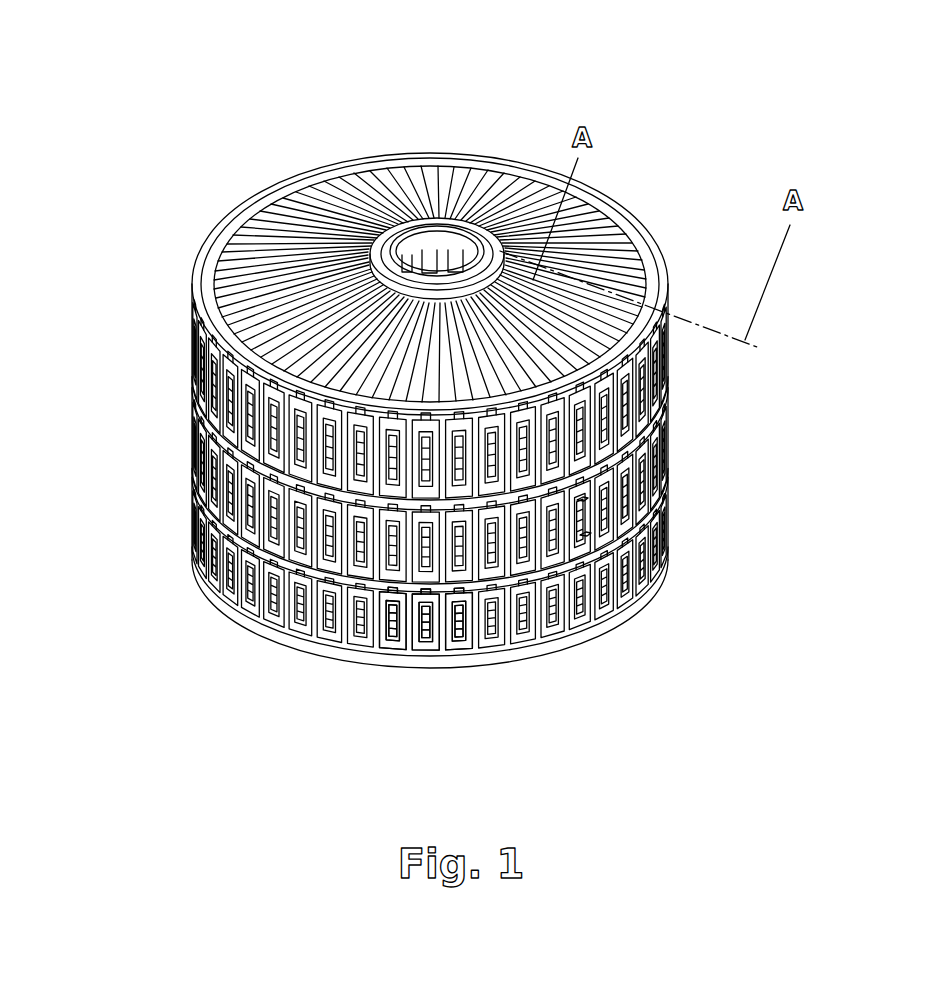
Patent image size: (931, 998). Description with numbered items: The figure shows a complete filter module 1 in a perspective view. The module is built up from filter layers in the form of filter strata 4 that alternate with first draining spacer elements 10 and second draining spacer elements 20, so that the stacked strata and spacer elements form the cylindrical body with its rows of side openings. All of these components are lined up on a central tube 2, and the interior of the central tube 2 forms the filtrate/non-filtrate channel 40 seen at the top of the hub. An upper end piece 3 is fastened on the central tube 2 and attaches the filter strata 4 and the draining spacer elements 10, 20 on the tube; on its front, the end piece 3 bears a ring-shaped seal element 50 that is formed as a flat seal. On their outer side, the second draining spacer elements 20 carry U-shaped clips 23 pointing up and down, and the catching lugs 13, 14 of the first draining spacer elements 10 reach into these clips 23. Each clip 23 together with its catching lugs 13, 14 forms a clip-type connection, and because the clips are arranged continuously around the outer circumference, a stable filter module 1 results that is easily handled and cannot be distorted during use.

The filter module 1 is at (333, 148).
The central tube 2 is at (416, 250).
The upper end piece 3 is at (347, 265).
The filter strata 4 is at (487, 648).
The first draining spacer element 10 is at (282, 218).
The catching lug 13 is at (588, 500).
The catching lug 14 is at (590, 532).
The second draining spacer element 20 is at (302, 443).
The U-shaped clip 23 is at (455, 658).
The filtrate/non-filtrate channel 40 is at (449, 236).
The ring-shaped seal element 50 is at (492, 232).